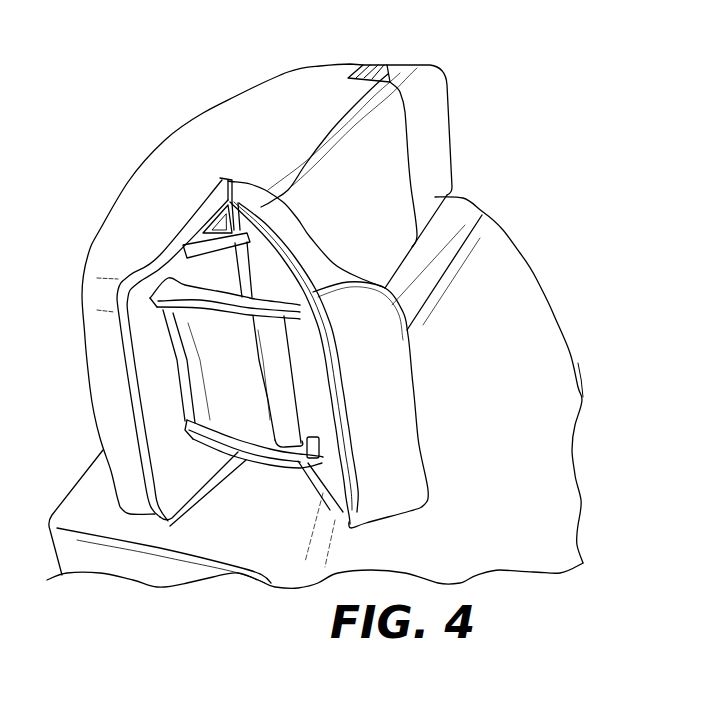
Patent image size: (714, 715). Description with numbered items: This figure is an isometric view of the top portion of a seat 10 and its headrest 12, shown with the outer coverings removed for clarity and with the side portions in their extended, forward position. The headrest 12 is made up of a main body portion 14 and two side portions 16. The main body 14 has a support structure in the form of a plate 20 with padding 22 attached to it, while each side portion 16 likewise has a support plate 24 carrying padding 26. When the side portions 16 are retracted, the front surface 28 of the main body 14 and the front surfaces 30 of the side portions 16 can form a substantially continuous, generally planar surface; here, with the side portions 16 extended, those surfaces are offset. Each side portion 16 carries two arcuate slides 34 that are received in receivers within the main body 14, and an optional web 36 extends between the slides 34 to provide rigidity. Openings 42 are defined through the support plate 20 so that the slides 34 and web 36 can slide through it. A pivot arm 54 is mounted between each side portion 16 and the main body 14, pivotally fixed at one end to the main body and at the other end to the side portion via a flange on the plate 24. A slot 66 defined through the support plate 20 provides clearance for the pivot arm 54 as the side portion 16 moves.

The seat 10 is at (604, 322).
The headrest 12 is at (556, 126).
The main body portion 14 is at (197, 147).
The side portions 16 is at (418, 66).
The plate 20 is at (366, 64).
The padding 22 is at (306, 150).
The plate 24 is at (382, 64).
The padding 26 is at (438, 100).
The front surface 28 is at (383, 250).
The front surfaces 30 is at (437, 152).
The slide 34 is at (172, 291).
The web 36 is at (195, 422).
The openings 42 is at (177, 368).
The pivot arm 54 is at (193, 234).
The slot 66 is at (187, 256).